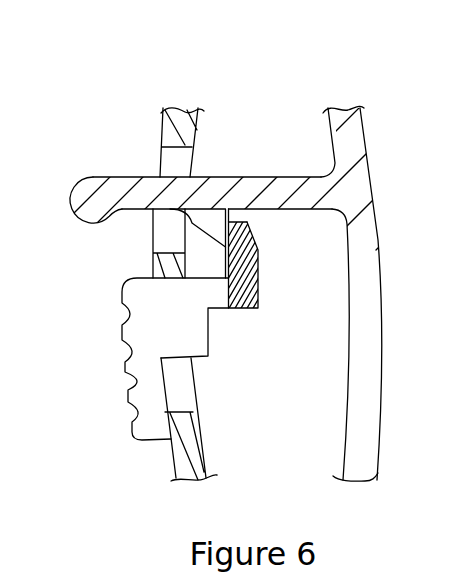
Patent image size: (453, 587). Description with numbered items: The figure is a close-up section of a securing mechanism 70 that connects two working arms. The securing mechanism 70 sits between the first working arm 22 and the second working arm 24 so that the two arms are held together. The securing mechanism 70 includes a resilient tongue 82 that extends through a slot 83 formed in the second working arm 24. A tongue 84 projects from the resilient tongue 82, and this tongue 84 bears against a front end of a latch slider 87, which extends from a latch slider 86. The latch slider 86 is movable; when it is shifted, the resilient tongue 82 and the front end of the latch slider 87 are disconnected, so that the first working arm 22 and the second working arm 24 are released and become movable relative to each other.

The first working arm 22 is at (367, 155).
The second working arm 24 is at (163, 125).
The securing mechanism 70 is at (287, 72).
The resilient tongue 82 is at (71, 209).
The slot 83 is at (112, 152).
The tongue 84 is at (199, 216).
The latch slider 86 is at (127, 370).
The front end of latch slider 87 is at (259, 257).